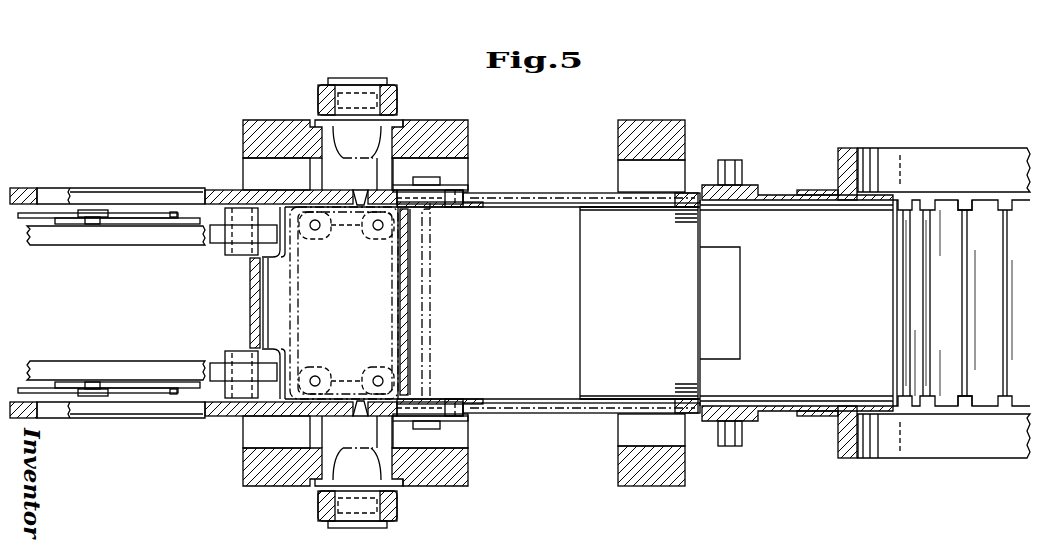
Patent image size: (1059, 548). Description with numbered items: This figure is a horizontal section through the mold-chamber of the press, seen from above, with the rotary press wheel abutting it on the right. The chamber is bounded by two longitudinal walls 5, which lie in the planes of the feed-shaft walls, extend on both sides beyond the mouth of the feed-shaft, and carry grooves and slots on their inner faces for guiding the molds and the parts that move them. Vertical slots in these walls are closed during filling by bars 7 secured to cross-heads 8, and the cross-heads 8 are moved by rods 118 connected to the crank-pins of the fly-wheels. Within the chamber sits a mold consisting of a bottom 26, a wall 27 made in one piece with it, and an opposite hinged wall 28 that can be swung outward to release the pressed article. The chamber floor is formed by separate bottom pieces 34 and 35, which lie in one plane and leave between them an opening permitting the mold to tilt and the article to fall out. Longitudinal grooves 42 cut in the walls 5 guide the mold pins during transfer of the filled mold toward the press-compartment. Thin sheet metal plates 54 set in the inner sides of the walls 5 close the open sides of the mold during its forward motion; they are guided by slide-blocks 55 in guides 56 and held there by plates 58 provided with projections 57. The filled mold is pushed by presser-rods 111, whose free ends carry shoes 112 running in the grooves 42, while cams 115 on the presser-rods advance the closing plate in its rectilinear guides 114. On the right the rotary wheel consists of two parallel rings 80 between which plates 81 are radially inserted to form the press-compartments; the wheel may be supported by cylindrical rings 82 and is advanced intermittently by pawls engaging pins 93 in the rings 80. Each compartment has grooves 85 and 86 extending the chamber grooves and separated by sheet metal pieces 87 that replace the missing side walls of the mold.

The longitudinal walls 5 is at (298, 168).
The bars 7 is at (357, 209).
The cross-heads 8 is at (359, 303).
The bottom 26 is at (415, 325).
The wall 27 is at (427, 292).
The wall 28 is at (293, 283).
The bottom piece 34 is at (344, 303).
The bottom piece 35 is at (639, 303).
The longitudinal grooves 42 is at (605, 207).
The sheet metal plates 54 is at (485, 210).
The slide-blocks 55 is at (457, 207).
The guides 56 is at (560, 197).
The projections 57 is at (420, 178).
The plates 58 is at (460, 193).
The rings 80 is at (753, 185).
The plates 81 is at (1003, 323).
The cylindrical rings 82 is at (850, 148).
The grooves 85 is at (807, 203).
The grooves 86 is at (970, 403).
The pieces of sheet metal 87 is at (790, 195).
The pins 93 is at (737, 162).
The presser-rods 111 is at (97, 232).
The shoes 112 is at (247, 210).
The rectilinear guides 114 is at (53, 190).
The cams 115 is at (97, 216).
The rods 118 is at (397, 102).